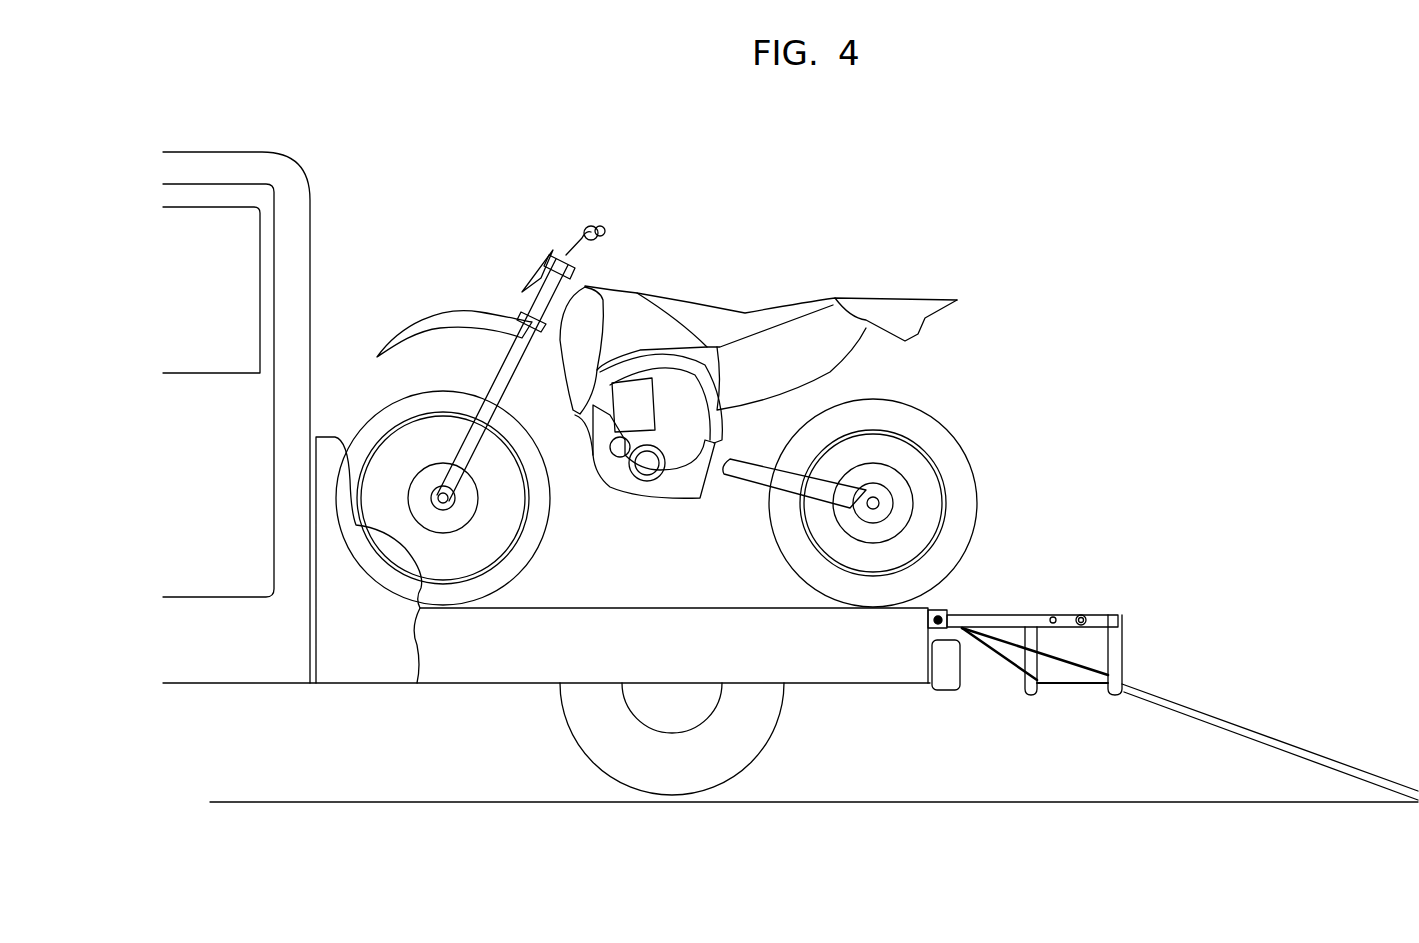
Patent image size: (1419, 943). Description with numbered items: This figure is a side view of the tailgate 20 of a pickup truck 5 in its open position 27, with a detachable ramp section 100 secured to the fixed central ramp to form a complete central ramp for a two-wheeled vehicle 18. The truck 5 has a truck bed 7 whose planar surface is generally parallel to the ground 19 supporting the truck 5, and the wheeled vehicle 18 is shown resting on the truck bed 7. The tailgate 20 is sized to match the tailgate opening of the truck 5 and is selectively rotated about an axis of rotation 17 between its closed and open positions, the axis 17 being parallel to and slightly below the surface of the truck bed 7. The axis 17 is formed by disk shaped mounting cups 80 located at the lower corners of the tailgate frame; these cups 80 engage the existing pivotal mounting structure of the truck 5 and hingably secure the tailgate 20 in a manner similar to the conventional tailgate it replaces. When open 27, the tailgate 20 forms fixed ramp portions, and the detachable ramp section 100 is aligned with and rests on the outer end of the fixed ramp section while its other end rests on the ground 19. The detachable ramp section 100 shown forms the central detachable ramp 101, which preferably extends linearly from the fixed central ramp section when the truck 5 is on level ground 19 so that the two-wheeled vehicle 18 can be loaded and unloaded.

The pickup truck 5 is at (466, 684).
The truck bed 7 is at (562, 607).
The axis of rotation 17 is at (943, 612).
The wheeled vehicle 18 is at (758, 318).
The ground 19 is at (944, 802).
The tailgate 20 is at (1031, 608).
The open position 27 is at (1117, 608).
The mounting cup 80 is at (948, 612).
The detachable ramp section 100 is at (1296, 745).
The central detachable ramp 101 is at (1322, 757).